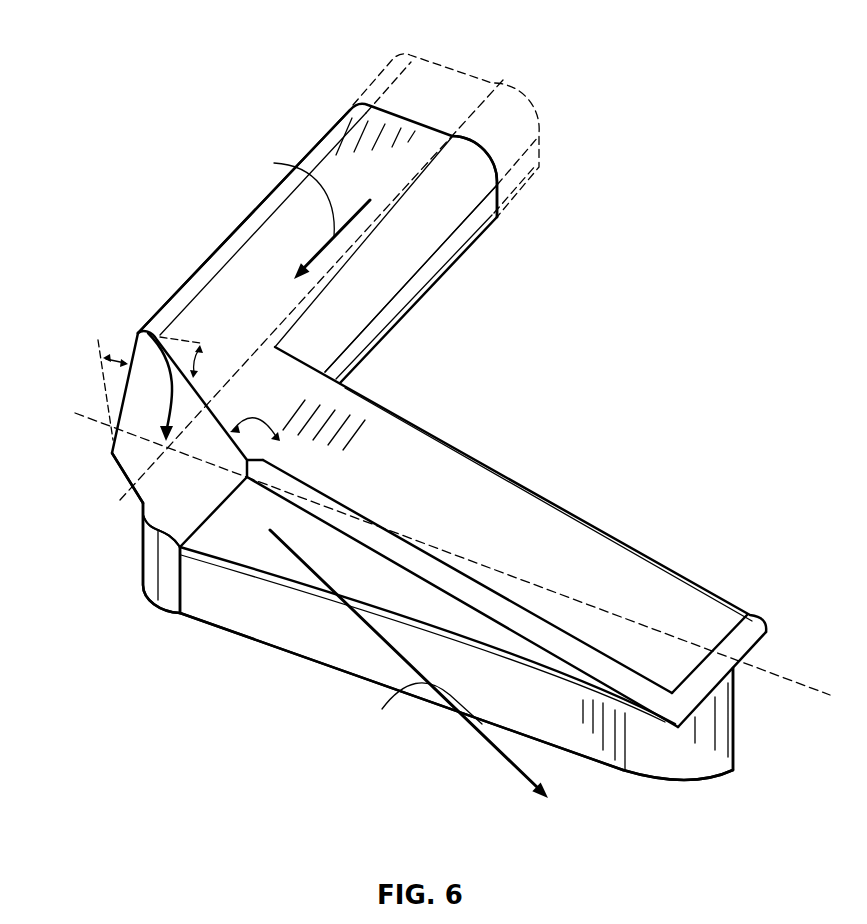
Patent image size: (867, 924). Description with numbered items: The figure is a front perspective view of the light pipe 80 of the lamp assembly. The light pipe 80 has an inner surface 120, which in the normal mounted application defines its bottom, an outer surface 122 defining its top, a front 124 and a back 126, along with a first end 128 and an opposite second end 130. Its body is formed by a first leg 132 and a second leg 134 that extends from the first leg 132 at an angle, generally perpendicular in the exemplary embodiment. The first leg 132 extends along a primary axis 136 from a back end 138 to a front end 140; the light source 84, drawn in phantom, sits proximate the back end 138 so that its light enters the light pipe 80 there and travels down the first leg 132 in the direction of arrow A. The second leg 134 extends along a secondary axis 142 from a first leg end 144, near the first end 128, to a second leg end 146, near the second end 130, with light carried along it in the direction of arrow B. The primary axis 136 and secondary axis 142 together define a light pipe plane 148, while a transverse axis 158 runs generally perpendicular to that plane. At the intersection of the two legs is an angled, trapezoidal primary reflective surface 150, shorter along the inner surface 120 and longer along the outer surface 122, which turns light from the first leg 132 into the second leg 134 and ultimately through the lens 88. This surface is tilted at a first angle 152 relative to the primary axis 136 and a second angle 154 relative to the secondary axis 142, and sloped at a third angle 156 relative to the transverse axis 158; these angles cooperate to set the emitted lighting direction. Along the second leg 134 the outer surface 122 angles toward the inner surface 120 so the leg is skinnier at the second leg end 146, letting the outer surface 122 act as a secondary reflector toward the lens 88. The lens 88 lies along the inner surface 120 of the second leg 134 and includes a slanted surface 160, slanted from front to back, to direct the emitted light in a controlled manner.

The light pipe 80 is at (184, 56).
The light source 84 is at (452, 65).
The lens 88 is at (590, 762).
The inner surface 120 is at (630, 777).
The outer surface 122 is at (333, 170).
The front 124 is at (280, 583).
The back 126 is at (500, 197).
The first end 128 is at (235, 230).
The second end 130 is at (740, 672).
The first leg 132 is at (390, 277).
The second leg 134 is at (524, 484).
The primary axis 136 is at (112, 528).
The back end 138 is at (452, 136).
The front end 140 is at (182, 544).
The secondary axis 142 is at (95, 418).
The first leg end 144 is at (110, 453).
The second leg end 146 is at (750, 646).
The light pipe plane 148 is at (137, 330).
The primary reflective surface 150 is at (198, 508).
The first angle 152 is at (255, 423).
The second angle 154 is at (203, 352).
The third angle 156 is at (120, 356).
The transverse axis 158 is at (98, 342).
The slanted surface 160 is at (700, 784).